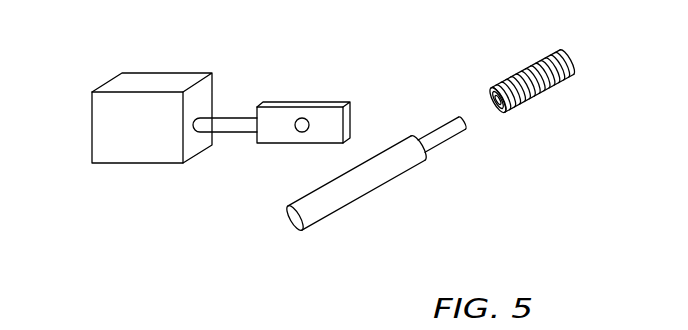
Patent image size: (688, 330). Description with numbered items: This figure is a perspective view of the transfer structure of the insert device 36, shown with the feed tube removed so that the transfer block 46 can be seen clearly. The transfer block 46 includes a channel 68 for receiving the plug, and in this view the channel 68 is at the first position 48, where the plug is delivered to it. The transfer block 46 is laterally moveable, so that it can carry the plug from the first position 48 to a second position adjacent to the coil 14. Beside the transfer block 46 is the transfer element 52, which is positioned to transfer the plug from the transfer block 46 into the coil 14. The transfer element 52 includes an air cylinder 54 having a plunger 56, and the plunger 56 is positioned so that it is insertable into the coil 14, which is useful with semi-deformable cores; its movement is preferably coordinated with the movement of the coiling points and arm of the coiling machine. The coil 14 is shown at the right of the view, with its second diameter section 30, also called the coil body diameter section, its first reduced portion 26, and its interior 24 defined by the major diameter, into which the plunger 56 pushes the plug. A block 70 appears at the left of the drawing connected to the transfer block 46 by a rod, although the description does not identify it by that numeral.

The coil 14 is at (553, 112).
The interior 24 is at (485, 119).
The first reduced portion 26 is at (566, 80).
The second diameter section 30 is at (525, 66).
The insert device 36 is at (130, 226).
The transfer block 46 is at (272, 102).
The first position 48 is at (271, 128).
The transfer element 52 is at (376, 190).
The air cylinder 54 is at (402, 167).
The plunger 56 is at (446, 126).
The channel 68 is at (300, 132).
The housing block 70 is at (134, 72).